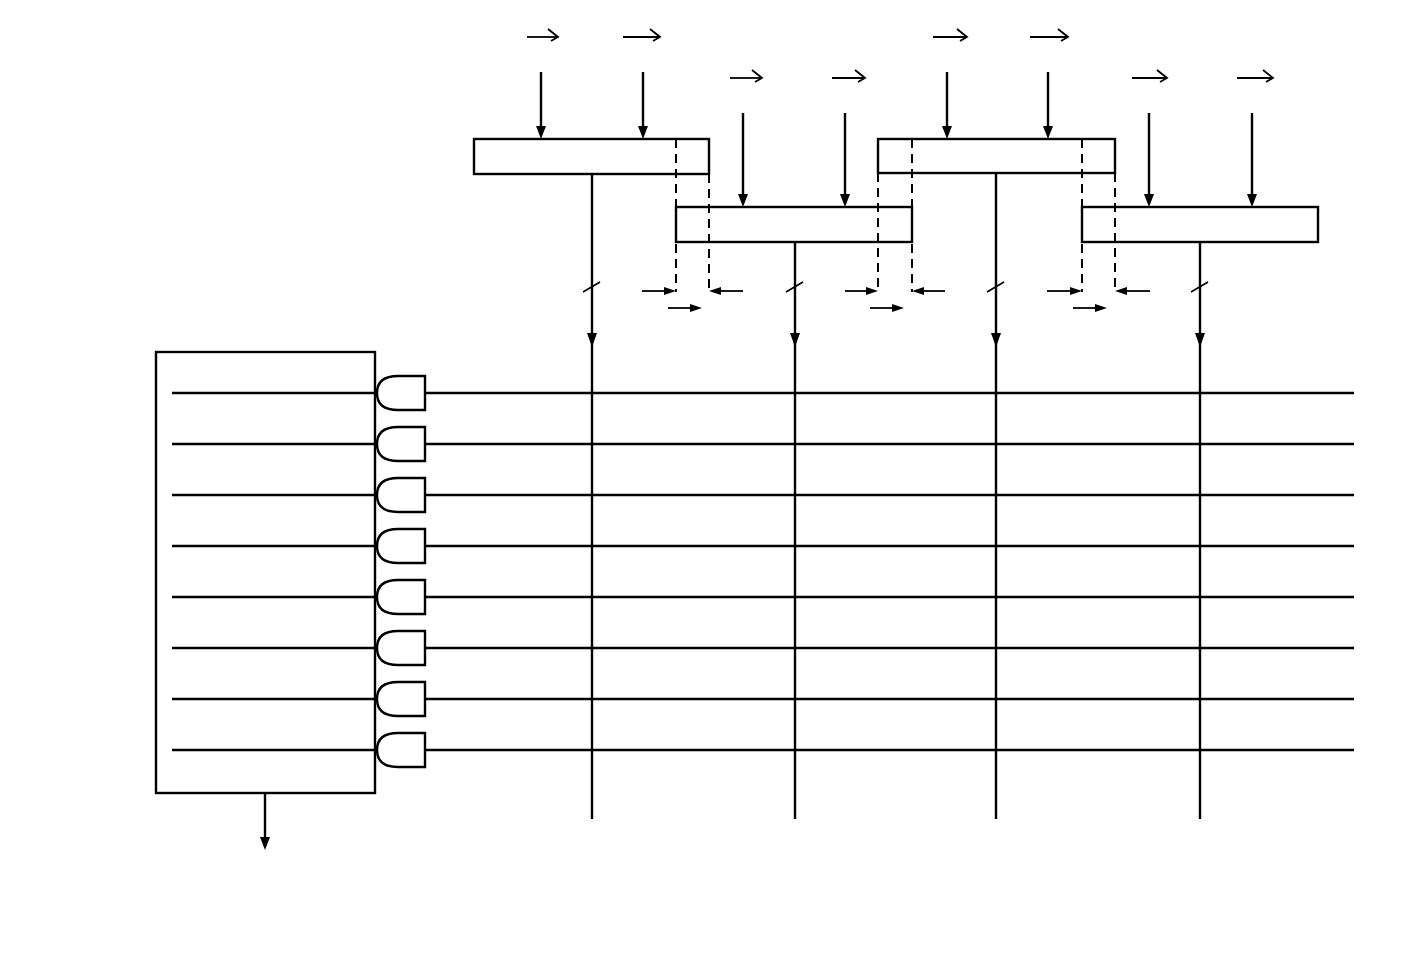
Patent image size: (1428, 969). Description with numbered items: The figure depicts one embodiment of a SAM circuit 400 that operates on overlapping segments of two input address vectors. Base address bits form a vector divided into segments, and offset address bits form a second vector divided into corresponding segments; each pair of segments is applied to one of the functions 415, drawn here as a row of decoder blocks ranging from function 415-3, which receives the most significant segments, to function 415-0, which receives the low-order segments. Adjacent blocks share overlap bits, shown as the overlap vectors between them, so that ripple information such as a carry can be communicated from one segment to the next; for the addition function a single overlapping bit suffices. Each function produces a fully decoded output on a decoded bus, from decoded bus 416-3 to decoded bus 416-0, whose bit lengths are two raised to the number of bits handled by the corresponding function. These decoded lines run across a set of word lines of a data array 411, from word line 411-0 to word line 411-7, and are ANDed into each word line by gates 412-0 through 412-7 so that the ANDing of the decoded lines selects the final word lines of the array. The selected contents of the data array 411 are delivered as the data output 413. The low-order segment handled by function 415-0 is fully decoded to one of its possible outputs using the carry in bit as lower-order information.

The memory system 400 is at (462, 851).
The data array 411 is at (152, 543).
The word line 0 411-0 is at (180, 380).
The word line 7 411-7 is at (180, 736).
The AND gate 0 412-0 is at (405, 373).
The AND gate 7 412-7 is at (395, 760).
The data output 413 is at (270, 848).
The functions 415 is at (430, 149).
The function 415-3 is at (508, 175).
The function 415-0 is at (1318, 217).
The decoded bus 416-3 is at (593, 382).
The decoded bus 416-0 is at (1201, 380).